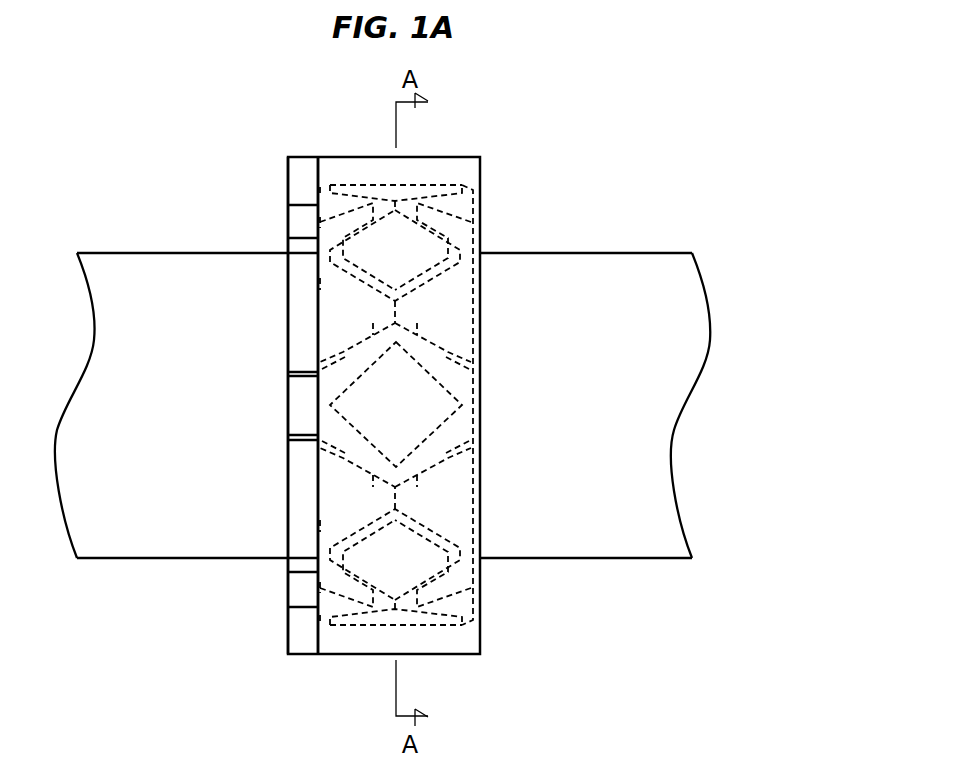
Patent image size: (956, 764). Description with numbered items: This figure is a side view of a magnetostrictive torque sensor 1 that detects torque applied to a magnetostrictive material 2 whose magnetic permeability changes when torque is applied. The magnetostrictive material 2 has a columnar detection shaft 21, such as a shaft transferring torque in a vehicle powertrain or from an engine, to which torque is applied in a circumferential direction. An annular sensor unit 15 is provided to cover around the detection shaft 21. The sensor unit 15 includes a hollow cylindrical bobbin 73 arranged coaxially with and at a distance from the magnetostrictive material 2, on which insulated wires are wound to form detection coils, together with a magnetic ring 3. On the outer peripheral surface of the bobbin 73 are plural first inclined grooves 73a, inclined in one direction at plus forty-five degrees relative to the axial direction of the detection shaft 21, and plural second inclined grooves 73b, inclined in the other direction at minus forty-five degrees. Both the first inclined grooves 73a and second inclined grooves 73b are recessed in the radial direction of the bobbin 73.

The magnetostrictive torque sensor 1 is at (322, 121).
The magnetostrictive material 2 is at (97, 258).
The magnetic ring 3 is at (480, 157).
The sensor unit 15 is at (285, 153).
The detection shaft 21 is at (160, 263).
The bobbin 73 is at (286, 199).
The first inclined grooves 73a is at (437, 362).
The second inclined grooves 73b is at (430, 453).